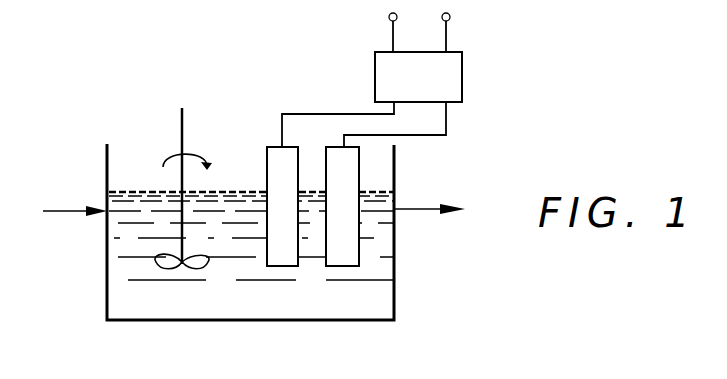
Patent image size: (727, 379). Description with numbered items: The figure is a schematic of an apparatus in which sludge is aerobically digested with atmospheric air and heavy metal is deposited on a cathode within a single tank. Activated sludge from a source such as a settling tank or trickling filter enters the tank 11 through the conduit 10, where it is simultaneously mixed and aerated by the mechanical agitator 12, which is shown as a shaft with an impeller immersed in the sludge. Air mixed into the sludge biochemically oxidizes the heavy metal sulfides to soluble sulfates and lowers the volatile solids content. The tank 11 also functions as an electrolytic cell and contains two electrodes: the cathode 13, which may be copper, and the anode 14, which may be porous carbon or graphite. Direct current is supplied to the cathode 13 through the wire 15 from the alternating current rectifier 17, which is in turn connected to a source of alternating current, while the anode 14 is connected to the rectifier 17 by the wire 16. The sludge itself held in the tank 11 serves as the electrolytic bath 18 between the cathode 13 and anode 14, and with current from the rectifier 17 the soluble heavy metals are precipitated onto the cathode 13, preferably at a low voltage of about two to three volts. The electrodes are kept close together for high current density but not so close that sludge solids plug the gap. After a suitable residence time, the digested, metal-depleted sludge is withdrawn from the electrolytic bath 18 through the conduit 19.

The conduit 10 is at (68, 214).
The tank 11 is at (103, 292).
The mechanical agitator 12 is at (171, 268).
The cathode 13 is at (287, 266).
The anode 14 is at (364, 262).
The wire 15 is at (314, 92).
The wire 16 is at (445, 137).
The alternating current rectifier 17 is at (462, 70).
The electrolytic bath 18 is at (315, 253).
The conduit 19 is at (415, 210).